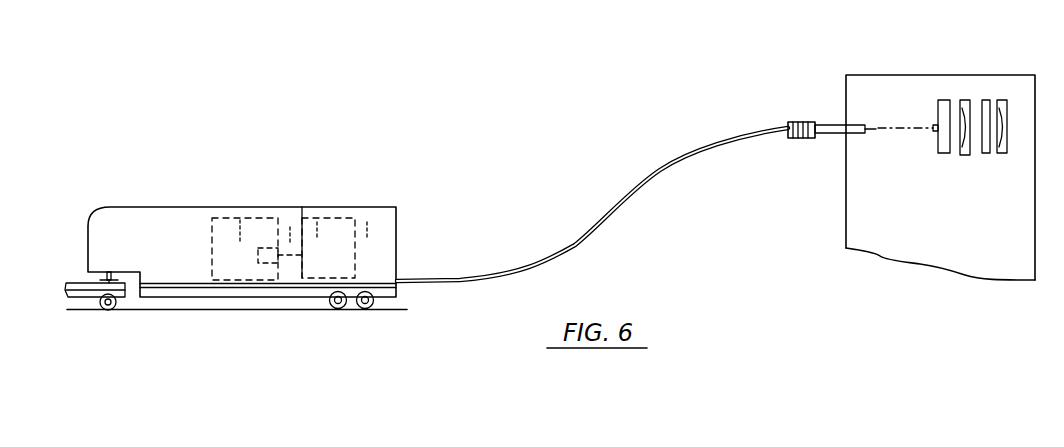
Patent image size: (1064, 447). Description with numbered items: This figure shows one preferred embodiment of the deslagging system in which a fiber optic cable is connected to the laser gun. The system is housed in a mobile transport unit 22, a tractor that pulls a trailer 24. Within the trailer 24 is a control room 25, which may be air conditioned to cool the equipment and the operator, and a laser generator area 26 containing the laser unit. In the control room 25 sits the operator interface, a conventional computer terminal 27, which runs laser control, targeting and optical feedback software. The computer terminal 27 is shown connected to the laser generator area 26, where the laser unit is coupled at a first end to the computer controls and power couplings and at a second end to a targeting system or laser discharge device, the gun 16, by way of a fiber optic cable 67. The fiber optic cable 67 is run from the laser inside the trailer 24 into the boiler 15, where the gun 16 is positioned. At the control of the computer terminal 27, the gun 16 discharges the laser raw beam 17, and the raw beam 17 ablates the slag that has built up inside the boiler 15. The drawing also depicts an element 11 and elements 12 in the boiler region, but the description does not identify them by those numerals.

The target element 11 is at (937, 143).
The optical elements 12 is at (965, 100).
The boiler 15 is at (940, 75).
The laser gun 16 is at (812, 122).
The raw beam 17 is at (898, 133).
The mobile transport unit 22 is at (236, 229).
The trailer 24 is at (162, 207).
The control room 25 is at (222, 218).
The laser generator area 26 is at (308, 219).
The computer terminal 27 is at (262, 248).
The fiber optic cable 67 is at (522, 264).